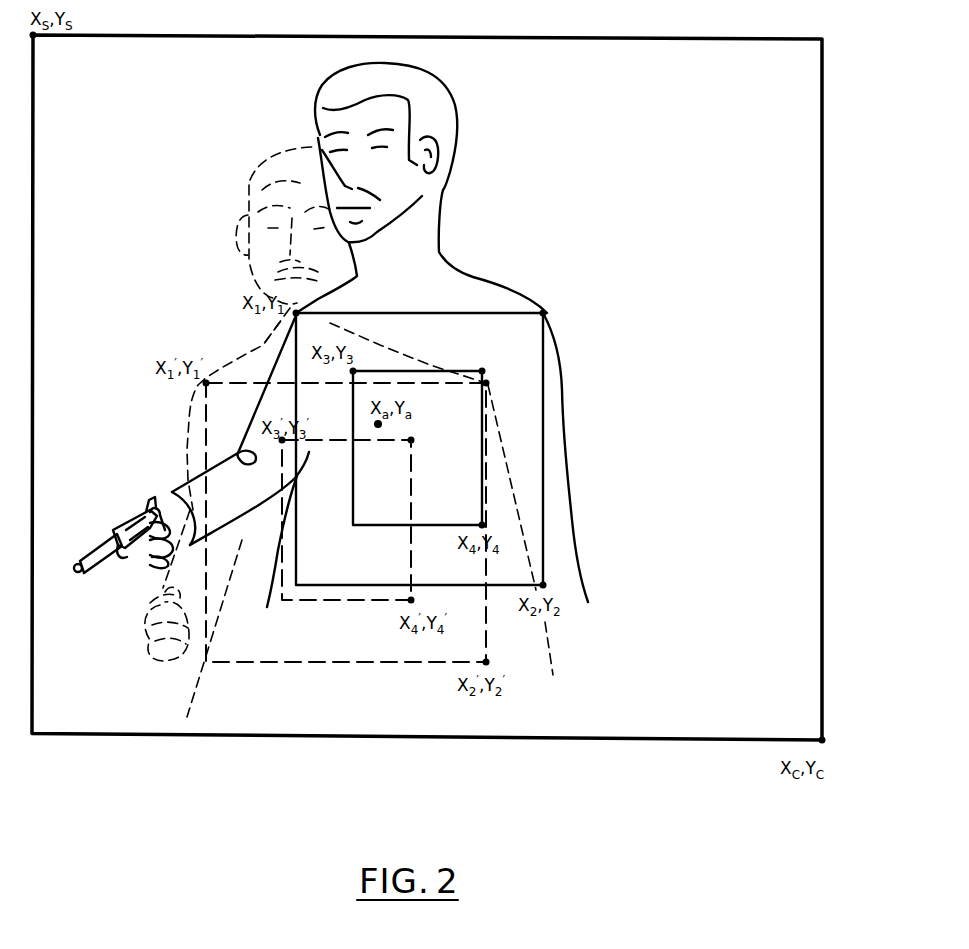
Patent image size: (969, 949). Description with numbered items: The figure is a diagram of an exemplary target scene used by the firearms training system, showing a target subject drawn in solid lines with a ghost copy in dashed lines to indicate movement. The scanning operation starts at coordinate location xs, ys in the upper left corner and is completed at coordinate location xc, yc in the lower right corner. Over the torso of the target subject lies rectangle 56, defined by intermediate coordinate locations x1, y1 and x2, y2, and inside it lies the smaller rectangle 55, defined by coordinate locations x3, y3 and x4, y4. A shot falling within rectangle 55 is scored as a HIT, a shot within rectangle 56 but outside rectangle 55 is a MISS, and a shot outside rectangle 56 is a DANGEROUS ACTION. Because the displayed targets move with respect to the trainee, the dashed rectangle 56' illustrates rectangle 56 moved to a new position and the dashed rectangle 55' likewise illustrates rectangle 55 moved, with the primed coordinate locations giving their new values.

The rectangle 56 is at (441, 423).
The rectangle 55 is at (422, 430).
The dashed-line rectangle 56' is at (346, 552).
The dashed-line rectangle 55' is at (347, 546).